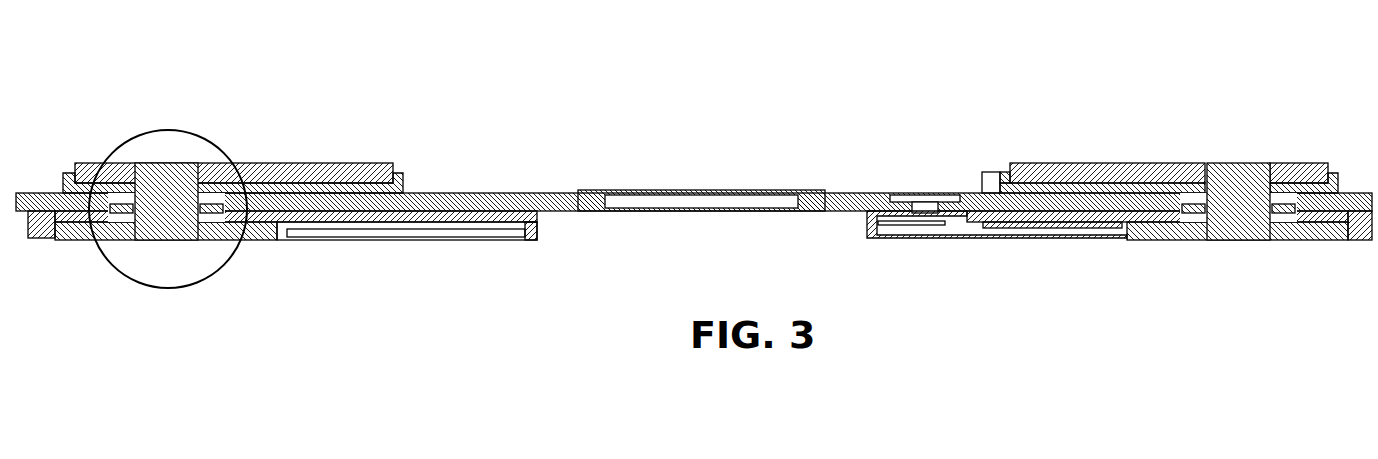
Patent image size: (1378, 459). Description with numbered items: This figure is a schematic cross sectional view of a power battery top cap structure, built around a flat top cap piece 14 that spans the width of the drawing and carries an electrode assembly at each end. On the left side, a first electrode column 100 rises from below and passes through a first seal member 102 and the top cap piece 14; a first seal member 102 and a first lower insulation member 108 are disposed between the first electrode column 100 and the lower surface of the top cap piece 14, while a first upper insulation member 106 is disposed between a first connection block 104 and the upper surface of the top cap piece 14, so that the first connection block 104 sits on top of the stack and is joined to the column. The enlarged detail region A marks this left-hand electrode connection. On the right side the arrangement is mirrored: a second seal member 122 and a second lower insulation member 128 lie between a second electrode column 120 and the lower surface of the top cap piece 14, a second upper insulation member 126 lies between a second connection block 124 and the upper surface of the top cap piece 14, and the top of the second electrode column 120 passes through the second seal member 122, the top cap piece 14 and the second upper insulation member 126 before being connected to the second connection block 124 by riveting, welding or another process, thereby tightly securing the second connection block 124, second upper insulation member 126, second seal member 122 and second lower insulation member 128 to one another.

The top cap piece 14 is at (543, 203).
The first electrode column 100 is at (83, 232).
The first seal member 102 is at (213, 203).
The first connection block 104 is at (372, 170).
The first upper insulation member 106 is at (74, 172).
The first lower insulation member 108 is at (42, 238).
The second electrode column 120 is at (1318, 237).
The second seal member 122 is at (1194, 245).
The second connection block 124 is at (1022, 168).
The second upper insulation member 126 is at (1333, 178).
The second lower insulation member 128 is at (1362, 245).
The detail region A is at (168, 128).